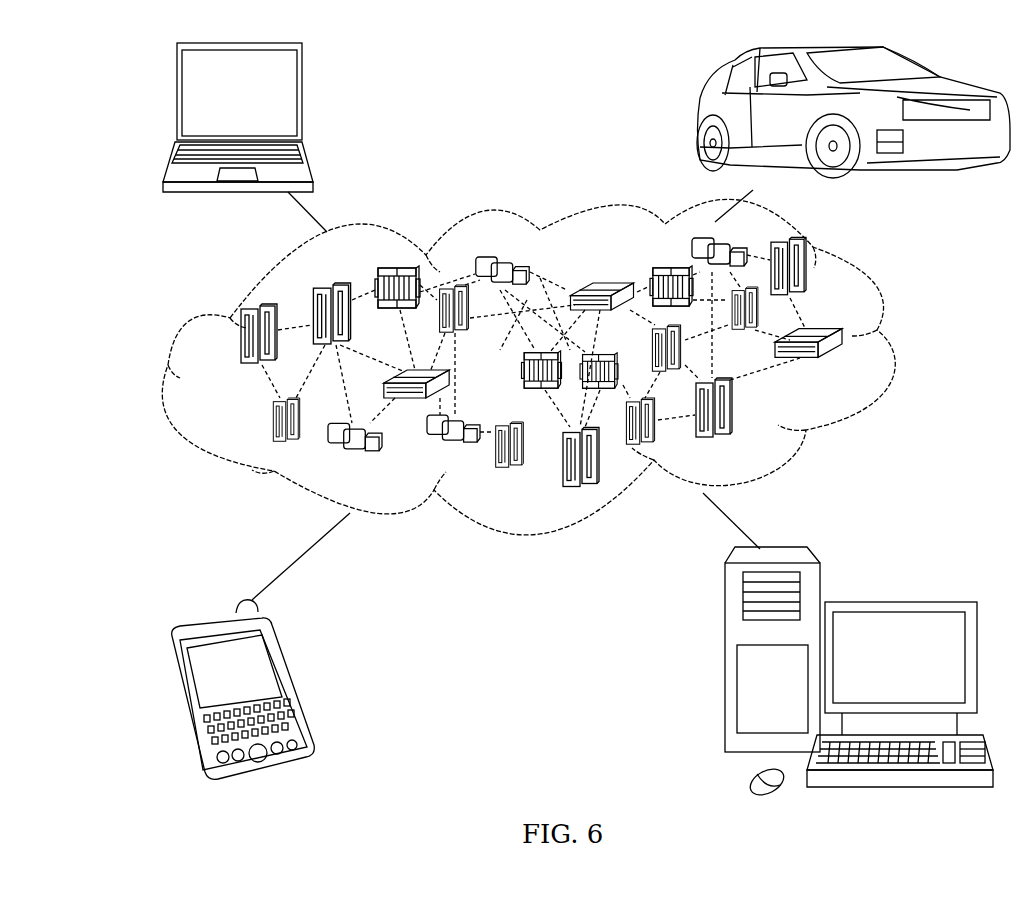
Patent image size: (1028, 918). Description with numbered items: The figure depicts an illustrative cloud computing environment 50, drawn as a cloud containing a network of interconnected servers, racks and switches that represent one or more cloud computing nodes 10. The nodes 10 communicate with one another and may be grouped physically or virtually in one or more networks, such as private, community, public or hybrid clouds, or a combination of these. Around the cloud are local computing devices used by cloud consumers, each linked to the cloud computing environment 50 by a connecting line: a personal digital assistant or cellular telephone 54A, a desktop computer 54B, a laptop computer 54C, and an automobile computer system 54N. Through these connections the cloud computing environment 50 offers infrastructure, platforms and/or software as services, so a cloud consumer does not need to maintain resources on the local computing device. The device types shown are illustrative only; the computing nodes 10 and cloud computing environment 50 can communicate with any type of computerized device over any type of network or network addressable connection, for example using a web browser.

The cloud computing nodes 10 is at (850, 371).
The cloud computing environment 50 is at (898, 343).
The personal digital assistant or cellular telephone 54A is at (290, 681).
The desktop computer 54B is at (897, 601).
The laptop computer 54C is at (302, 100).
The automobile computer system 54N is at (698, 115).